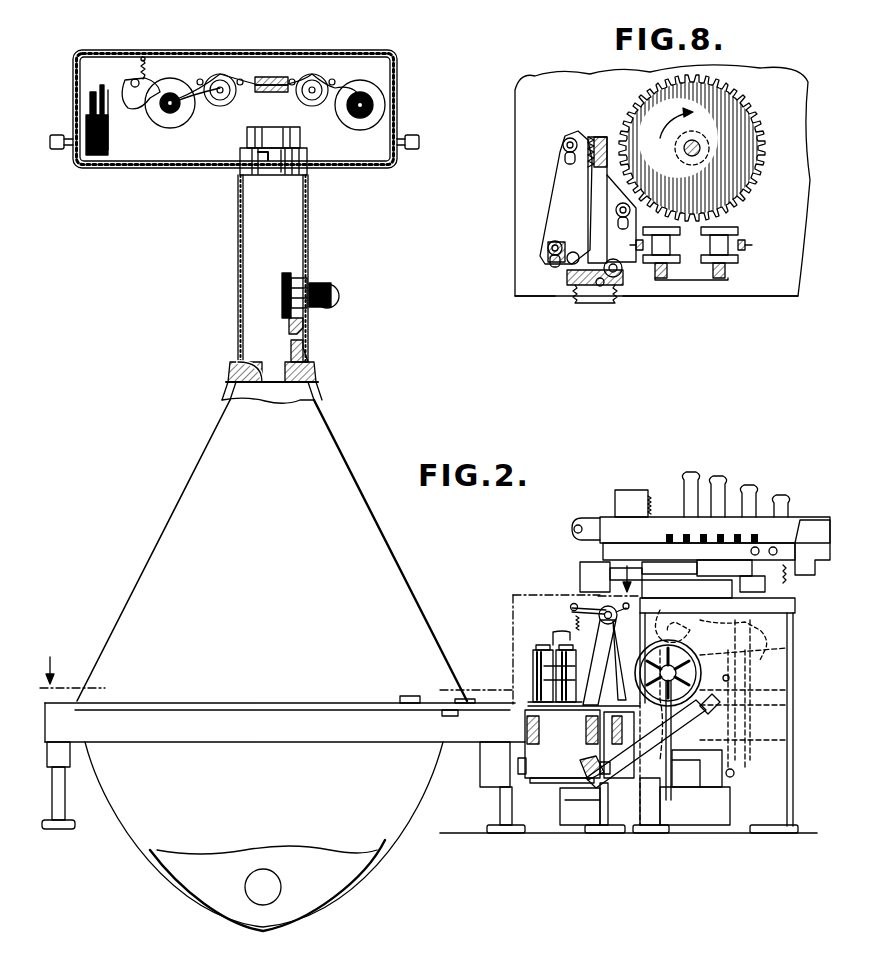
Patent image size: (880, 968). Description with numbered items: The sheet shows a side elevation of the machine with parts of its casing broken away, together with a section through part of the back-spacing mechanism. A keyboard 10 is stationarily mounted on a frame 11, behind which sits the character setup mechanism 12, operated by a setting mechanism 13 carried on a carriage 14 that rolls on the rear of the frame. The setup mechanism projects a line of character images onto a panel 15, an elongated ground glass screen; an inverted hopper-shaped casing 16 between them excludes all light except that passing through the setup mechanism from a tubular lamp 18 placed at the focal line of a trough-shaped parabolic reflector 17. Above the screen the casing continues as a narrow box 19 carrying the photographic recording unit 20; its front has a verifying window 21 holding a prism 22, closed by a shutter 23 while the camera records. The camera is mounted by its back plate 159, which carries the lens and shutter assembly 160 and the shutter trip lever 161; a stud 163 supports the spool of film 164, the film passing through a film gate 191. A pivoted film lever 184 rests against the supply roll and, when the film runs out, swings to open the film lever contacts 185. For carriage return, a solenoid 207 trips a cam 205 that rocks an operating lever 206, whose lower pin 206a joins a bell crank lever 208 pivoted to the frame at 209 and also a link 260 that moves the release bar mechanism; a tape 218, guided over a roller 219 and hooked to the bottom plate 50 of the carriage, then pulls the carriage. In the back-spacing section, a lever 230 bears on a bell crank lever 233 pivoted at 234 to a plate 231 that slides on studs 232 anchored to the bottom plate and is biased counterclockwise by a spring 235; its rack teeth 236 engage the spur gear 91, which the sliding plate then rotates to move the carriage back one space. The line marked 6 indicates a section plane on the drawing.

In FIG. 2, the photographic recording unit 20 is at (400, 81).
In FIG. 2, the film lever contacts 185 is at (93, 87).
In FIG. 2, the film gate 191 is at (272, 76).
In FIG. 2, the film lever 184 is at (130, 98).
In FIG. 2, the stud 163 is at (173, 110).
In FIG. 2, the spool of film 164 is at (178, 120).
In FIG. 2, the shutter trip lever 161 is at (262, 156).
In FIG. 2, the lens and shutter assembly 160 is at (283, 177).
In FIG. 2, the back plate 159 is at (374, 170).
In FIG. 2, the narrow box 19 is at (238, 258).
In FIG. 2, the shutter 23 is at (283, 304).
In FIG. 2, the verifying window 21 is at (304, 331).
In FIG. 2, the prism 22 is at (304, 350).
In FIG. 2, the panel 15 is at (270, 374).
In FIG. 2, the inverted hopper-shaped casing 16 is at (172, 545).
In FIG. 2, the character setup mechanism 12 is at (283, 762).
In FIG. 2, the section line 6 is at (340, 635).
In FIG. 2, the trough-shaped parabolic reflector 17 is at (158, 854).
In FIG. 2, the tubular lamp 18 is at (263, 892).
In FIG. 2, the keyboard 10 is at (668, 507).
In FIG. 2, the setting mechanism 13 is at (565, 618).
In FIG. 2, the frame 11 is at (812, 597).
In FIG. 2, the link 260 is at (591, 712).
In FIG. 2, the carriage 14 is at (550, 782).
In FIG. 2, the bottom plate 50 is at (563, 785).
In FIG. 2, the roller 219 is at (596, 800).
In FIG. 2, the tape 218 is at (653, 745).
In FIG. 2, the bell crank lever 208 is at (703, 780).
In FIG. 2, the pivot 209 is at (730, 778).
In FIG. 2, the operating lever 206 is at (763, 644).
In FIG. 2, the solenoid 207 is at (744, 680).
In FIG. 2, the cam 205 is at (713, 706).
In FIG. 2, the pin 206a is at (787, 740).
In FIG. 8, the spur gear 91 is at (751, 114).
In FIG. 8, the rack teeth 236 is at (607, 137).
In FIG. 8, the studs 232 is at (563, 143).
In FIG. 8, the plate 231 is at (568, 180).
In FIG. 8, the bell crank lever 233 is at (592, 226).
In FIG. 8, the spring 235 is at (567, 291).
In FIG. 8, the lever 230 is at (599, 288).
In FIG. 8, the pivot 234 is at (621, 275).